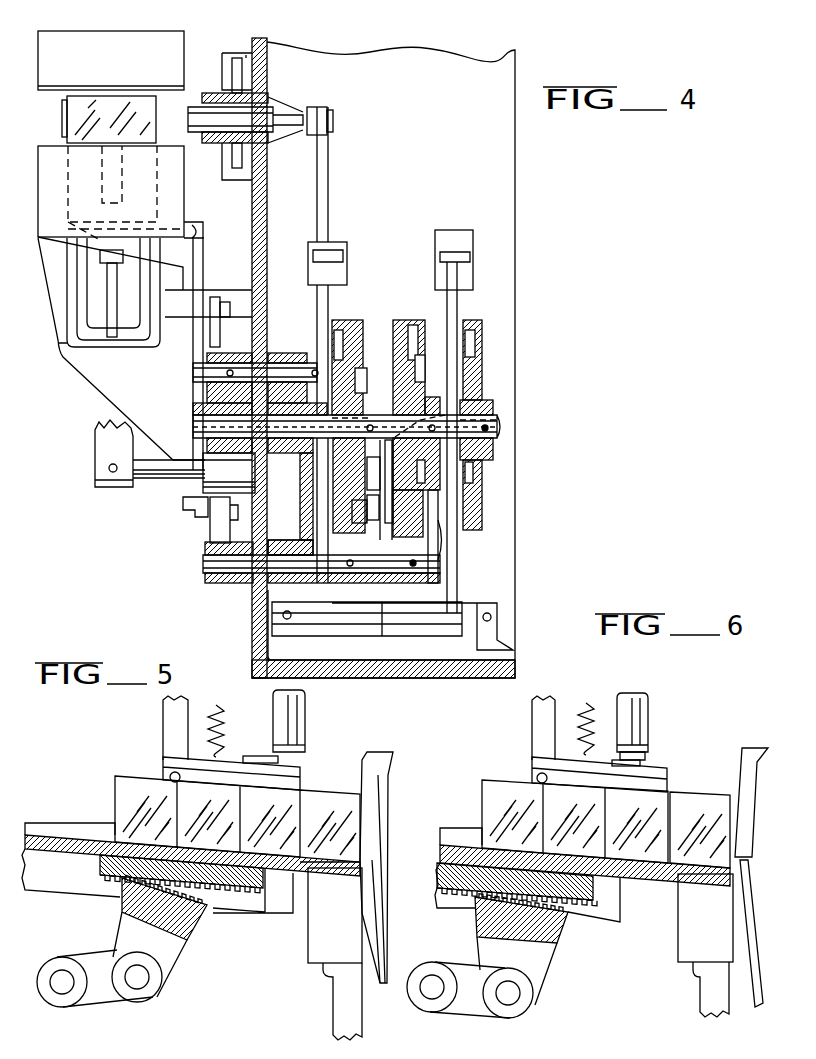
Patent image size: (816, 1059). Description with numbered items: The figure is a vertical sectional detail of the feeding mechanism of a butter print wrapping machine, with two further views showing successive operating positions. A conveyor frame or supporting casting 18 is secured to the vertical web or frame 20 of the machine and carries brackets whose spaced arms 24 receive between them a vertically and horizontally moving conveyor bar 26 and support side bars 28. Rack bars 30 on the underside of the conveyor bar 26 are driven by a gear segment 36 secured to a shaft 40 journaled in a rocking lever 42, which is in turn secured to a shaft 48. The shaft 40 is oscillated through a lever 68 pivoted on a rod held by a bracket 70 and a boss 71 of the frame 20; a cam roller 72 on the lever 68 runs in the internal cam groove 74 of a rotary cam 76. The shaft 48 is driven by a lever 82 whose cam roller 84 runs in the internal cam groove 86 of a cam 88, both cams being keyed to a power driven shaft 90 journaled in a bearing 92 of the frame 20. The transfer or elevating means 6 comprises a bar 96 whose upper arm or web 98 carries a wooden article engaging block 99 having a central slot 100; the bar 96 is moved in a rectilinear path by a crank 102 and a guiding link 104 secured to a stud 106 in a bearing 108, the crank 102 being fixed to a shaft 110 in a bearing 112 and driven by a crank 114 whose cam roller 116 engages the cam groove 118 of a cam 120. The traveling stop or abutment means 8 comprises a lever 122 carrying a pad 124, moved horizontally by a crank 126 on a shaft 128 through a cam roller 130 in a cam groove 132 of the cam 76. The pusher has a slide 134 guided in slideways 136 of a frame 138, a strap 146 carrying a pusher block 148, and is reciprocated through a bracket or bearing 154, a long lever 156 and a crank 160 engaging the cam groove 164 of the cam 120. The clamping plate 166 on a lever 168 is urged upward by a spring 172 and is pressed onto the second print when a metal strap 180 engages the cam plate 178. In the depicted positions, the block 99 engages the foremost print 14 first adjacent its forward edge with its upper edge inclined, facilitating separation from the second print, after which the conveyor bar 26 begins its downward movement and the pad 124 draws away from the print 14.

In FIG. 5, the transfer or elevating means 6 is at (308, 983).
In FIG. 6, the transfer or elevating means 6 is at (693, 985).
In FIG. 5, the traveling stop or abutment means 8 is at (392, 894).
In FIG. 6, the traveling stop or abutment means 8 is at (767, 888).
In FIG. 4, the print of butter 14 is at (83, 121).
In FIG. 5, the print of butter 14 is at (317, 805).
In FIG. 6, the print of butter 14 is at (688, 803).
In FIG. 4, the frame or supporting casting 18 is at (95, 372).
In FIG. 4, the vertical web or frame 20 is at (268, 242).
In FIG. 4, the spaced arms 24 is at (77, 283).
In FIG. 4, the conveyor bar 26 is at (100, 257).
In FIG. 5, the conveyor bar 26 is at (62, 849).
In FIG. 6, the conveyor bar 26 is at (440, 862).
In FIG. 5, the side bars or strips 28 is at (68, 833).
In FIG. 6, the side bars or strips 28 is at (457, 834).
In FIG. 5, the rack bars 30 is at (100, 868).
In FIG. 6, the rack bars 30 is at (468, 880).
In FIG. 4, the gear segment 36 is at (115, 283).
In FIG. 5, the gear segment 36 is at (177, 948).
In FIG. 6, the gear segment 36 is at (537, 965).
In FIG. 5, the shaft 40 is at (138, 983).
In FIG. 6, the shaft 40 is at (510, 997).
In FIG. 5, the rocking lever 42 is at (103, 993).
In FIG. 6, the rocking lever 42 is at (463, 1003).
In FIG. 5, the shaft 48 is at (63, 988).
In FIG. 6, the shaft 48 is at (433, 988).
In FIG. 4, the lever or crank 68 is at (326, 310).
In FIG. 4, the bracket 70 is at (475, 638).
In FIG. 4, the boss 71 is at (302, 628).
In FIG. 4, the cam roller 72 is at (367, 403).
In FIG. 4, the internal cam groove 74 is at (340, 343).
In FIG. 4, the rotary, power driven cam 76 is at (357, 345).
In FIG. 4, the crank or lever 82 is at (460, 305).
In FIG. 4, the cam roller 84 is at (497, 415).
In FIG. 4, the internal cam groove 86 is at (470, 347).
In FIG. 4, the rotary, power driven cam 88 is at (478, 375).
In FIG. 4, the power driven shaft 90 is at (218, 421).
In FIG. 4, the bearing 92 is at (207, 403).
In FIG. 4, the bar 96 is at (195, 484).
In FIG. 5, the bar 96 is at (345, 997).
In FIG. 6, the bar 96 is at (718, 997).
In FIG. 4, the laterally extending arm or web 98 is at (190, 238).
In FIG. 4, the article engaging block 99 is at (145, 177).
In FIG. 5, the article engaging block 99 is at (318, 920).
In FIG. 6, the article engaging block 99 is at (692, 920).
In FIG. 4, the vertical central opening or slot 100 is at (112, 190).
In FIG. 4, the power operated lever or crank 102 is at (208, 528).
In FIG. 4, the guiding link or lever 104 is at (213, 298).
In FIG. 4, the stud 106 is at (217, 370).
In FIG. 4, the bearing 108 is at (270, 355).
In FIG. 4, the shaft 110 is at (215, 558).
In FIG. 4, the bearing 112 is at (278, 552).
In FIG. 4, the crank 114 is at (385, 523).
In FIG. 4, the cam roller 116 is at (428, 400).
In FIG. 4, the cam groove 118 is at (407, 320).
In FIG. 4, the rotary, power driven cam 120 is at (418, 322).
In FIG. 4, the bar or lever 122 is at (112, 430).
In FIG. 5, the bar or lever 122 is at (382, 932).
In FIG. 6, the bar or lever 122 is at (753, 957).
In FIG. 5, the pad or block 124 is at (377, 778).
In FIG. 6, the pad or block 124 is at (750, 807).
In FIG. 4, the lever or crank 126 is at (335, 470).
In FIG. 4, the shaft 128 is at (148, 474).
In FIG. 4, the cam roller 130 is at (340, 510).
In FIG. 4, the cam groove 132 is at (357, 382).
In FIG. 4, the slide or reciprocating means 134 is at (233, 77).
In FIG. 4, the slideways 136 is at (232, 55).
In FIG. 4, the frame 138 is at (240, 55).
In FIG. 5, the bar or strap 146 is at (281, 717).
In FIG. 6, the bar or strap 146 is at (622, 720).
In FIG. 4, the pusher block 148 is at (63, 112).
In FIG. 5, the pusher block 148 is at (298, 713).
In FIG. 6, the pusher block 148 is at (640, 722).
In FIG. 4, the bracket or bearing 154 is at (300, 110).
In FIG. 4, the long lever 156 is at (320, 190).
In FIG. 4, the crank 160 is at (432, 537).
In FIG. 4, the cam groove 164 is at (420, 363).
In FIG. 5, the clamping plate or bar 166 is at (253, 778).
In FIG. 6, the clamping plate or bar 166 is at (625, 779).
In FIG. 5, the flat bar or lever 168 is at (173, 760).
In FIG. 6, the flat bar or lever 168 is at (532, 757).
In FIG. 5, the spring 172 is at (210, 706).
In FIG. 6, the spring 172 is at (582, 703).
In FIG. 5, the cam plate or block 178 is at (260, 760).
In FIG. 6, the cam plate or block 178 is at (642, 767).
In FIG. 5, the metal strap 180 is at (297, 752).
In FIG. 6, the metal strap 180 is at (645, 755).